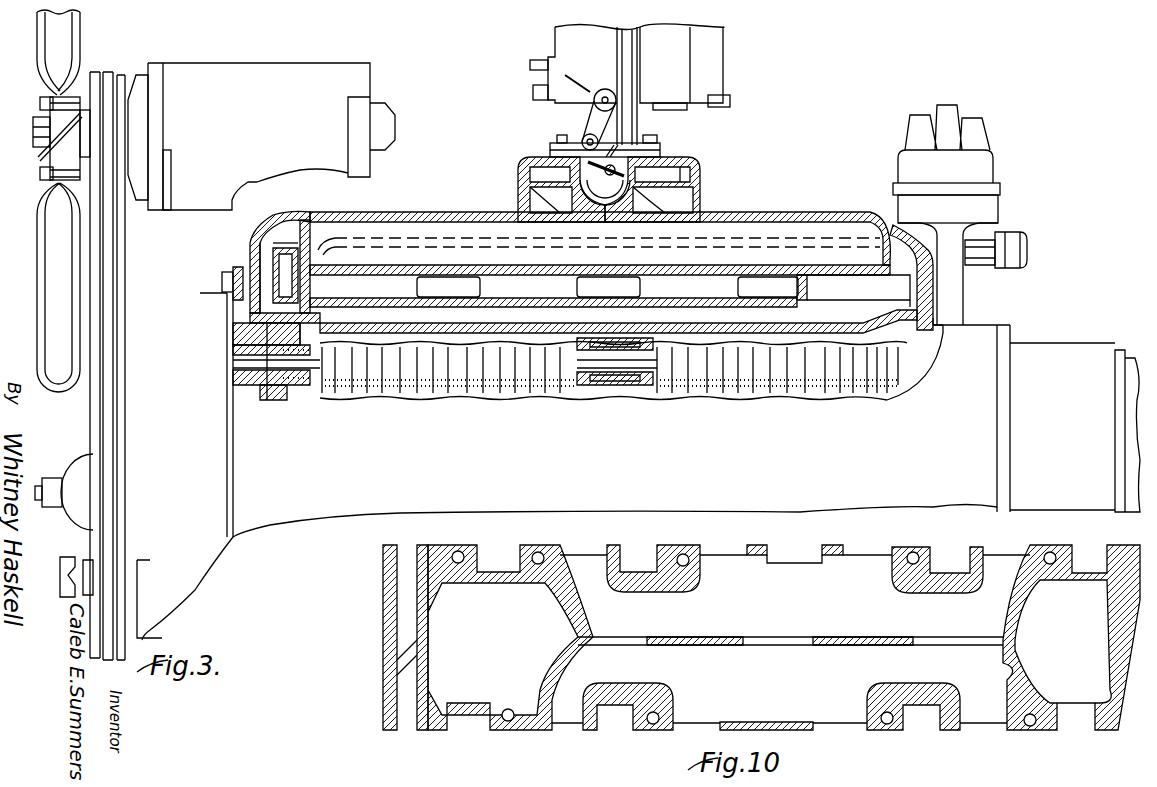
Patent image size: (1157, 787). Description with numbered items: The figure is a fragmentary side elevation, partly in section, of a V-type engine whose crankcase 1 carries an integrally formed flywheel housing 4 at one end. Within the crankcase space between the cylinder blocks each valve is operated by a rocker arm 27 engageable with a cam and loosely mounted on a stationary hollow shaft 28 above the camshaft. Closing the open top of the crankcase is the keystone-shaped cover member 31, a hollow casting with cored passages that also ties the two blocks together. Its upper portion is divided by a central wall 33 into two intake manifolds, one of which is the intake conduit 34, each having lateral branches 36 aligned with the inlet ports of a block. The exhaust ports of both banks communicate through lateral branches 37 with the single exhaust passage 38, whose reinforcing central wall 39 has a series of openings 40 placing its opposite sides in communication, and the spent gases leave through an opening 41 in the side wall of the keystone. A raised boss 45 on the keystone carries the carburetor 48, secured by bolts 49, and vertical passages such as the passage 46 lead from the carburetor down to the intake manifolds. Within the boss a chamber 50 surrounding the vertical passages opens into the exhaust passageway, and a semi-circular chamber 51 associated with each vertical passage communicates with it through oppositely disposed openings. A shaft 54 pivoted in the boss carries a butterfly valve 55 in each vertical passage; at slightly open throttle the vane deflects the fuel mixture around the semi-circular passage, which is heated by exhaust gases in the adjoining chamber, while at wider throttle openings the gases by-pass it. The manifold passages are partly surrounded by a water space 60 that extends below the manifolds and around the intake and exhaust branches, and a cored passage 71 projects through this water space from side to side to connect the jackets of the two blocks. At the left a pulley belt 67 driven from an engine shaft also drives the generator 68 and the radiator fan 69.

In FIG. 3, the engine crankcase 1 is at (977, 333).
In FIG. 3, the flywheel housing 4 is at (1088, 348).
In FIG. 3, the rocker arm 27 is at (757, 395).
In FIG. 3, the stationary hollow shaft 28 is at (620, 392).
In FIG. 3, the cover member 31 is at (780, 212).
In FIG. 3, the central wall 33 is at (802, 230).
In FIG. 3, the intake conduit 34 is at (599, 250).
In FIG. 10, the lateral branch 36 is at (775, 637).
In FIG. 10, the lateral branch 37 is at (785, 639).
In FIG. 3, the exhaust passage 38 is at (610, 291).
In FIG. 10, the exhaust passage 38 is at (582, 637).
In FIG. 10, the central wall 39 is at (850, 637).
In FIG. 10, the openings 40 is at (628, 637).
In FIG. 10, the opening 41 is at (795, 554).
In FIG. 3, the raised boss 45 is at (699, 172).
In FIG. 3, the vertical passage 46 is at (605, 202).
In FIG. 3, the carburetor 48 is at (712, 47).
In FIG. 3, the bolts 49 is at (653, 141).
In FIG. 3, the chamber 50 is at (605, 200).
In FIG. 3, the semi-circular chamber 51 is at (674, 174).
In FIG. 3, the shaft 54 is at (603, 162).
In FIG. 3, the butterfly valve 55 is at (619, 180).
In FIG. 3, the water space 60 is at (583, 288).
In FIG. 10, the water space 60 is at (784, 637).
In FIG. 3, the pulley belt 67 is at (112, 300).
In FIG. 3, the generator 68 is at (283, 80).
In FIG. 3, the radiator fan 69 is at (42, 240).
In FIG. 3, the cored passage 71 is at (270, 268).